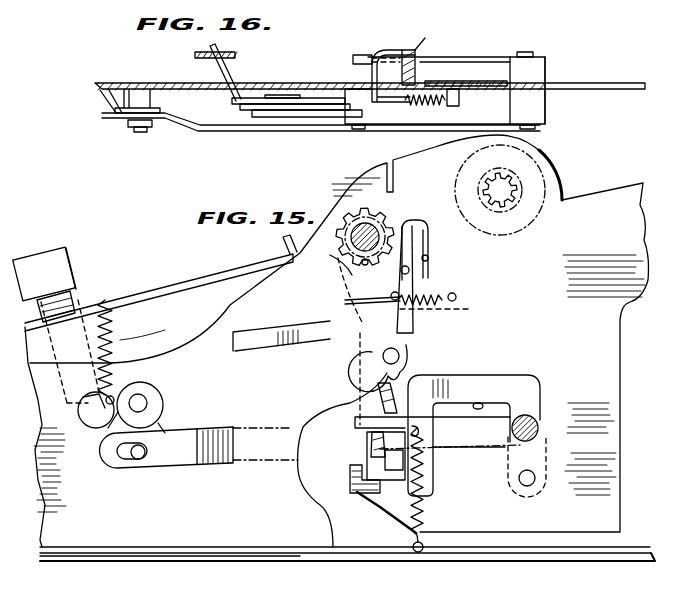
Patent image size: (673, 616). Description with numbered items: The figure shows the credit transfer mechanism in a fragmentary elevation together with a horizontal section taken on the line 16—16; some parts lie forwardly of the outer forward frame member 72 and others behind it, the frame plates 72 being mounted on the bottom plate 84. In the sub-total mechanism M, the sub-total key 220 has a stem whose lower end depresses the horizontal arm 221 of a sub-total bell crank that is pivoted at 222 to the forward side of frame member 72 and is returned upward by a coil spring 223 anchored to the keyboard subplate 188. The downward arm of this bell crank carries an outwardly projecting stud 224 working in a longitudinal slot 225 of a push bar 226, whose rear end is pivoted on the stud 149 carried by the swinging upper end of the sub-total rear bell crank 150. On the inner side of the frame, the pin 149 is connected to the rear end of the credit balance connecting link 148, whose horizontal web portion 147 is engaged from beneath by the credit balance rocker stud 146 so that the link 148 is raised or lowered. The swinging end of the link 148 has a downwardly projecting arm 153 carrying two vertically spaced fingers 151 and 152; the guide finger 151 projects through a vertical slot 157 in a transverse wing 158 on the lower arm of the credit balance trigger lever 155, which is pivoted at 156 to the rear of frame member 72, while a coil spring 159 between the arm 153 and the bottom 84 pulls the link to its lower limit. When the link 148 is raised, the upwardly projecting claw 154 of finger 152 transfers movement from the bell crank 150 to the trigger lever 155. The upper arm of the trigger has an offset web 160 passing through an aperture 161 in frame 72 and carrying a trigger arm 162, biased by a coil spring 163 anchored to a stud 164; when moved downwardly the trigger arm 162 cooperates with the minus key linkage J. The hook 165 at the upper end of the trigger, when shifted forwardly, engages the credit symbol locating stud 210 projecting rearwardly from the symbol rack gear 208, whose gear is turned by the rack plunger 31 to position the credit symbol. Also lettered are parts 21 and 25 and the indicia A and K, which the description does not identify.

In FIG. 16, the frame plate 72 is at (633, 91).
In FIG. 15, the frame plate 72 is at (238, 535).
In FIG. 15, the bottom plate 84 is at (482, 557).
In FIG. 16, the trigger arm 162 is at (303, 75).
In FIG. 15, the trigger arm 162 is at (341, 337).
In FIG. 16, the horizontal arm 221 is at (111, 96).
In FIG. 15, the horizontal arm 221 is at (108, 428).
In FIG. 16, the pivot 222 is at (161, 101).
In FIG. 15, the pivot 222 is at (149, 401).
In FIG. 16, the outwardly projecting stud 224 is at (143, 132).
In FIG. 15, the outwardly projecting stud 224 is at (142, 460).
In FIG. 15, the longitudinal slot 225 is at (120, 459).
In FIG. 16, the push bar 226 is at (295, 118).
In FIG. 15, the push bar 226 is at (192, 457).
In FIG. 15, the coil spring 223 is at (110, 326).
In FIG. 15, the sub-total key 220 is at (73, 260).
In FIG. 15, the keyboard subplate 188 is at (178, 284).
In FIG. 16, the horizontal web portion 147 is at (500, 58).
In FIG. 15, the horizontal web portion 147 is at (480, 386).
In FIG. 16, the credit balance connecting link 148 is at (547, 64).
In FIG. 15, the credit balance connecting link 148 is at (541, 377).
In FIG. 16, the pivot stud 149 is at (532, 53).
In FIG. 15, the pivot stud 149 is at (540, 426).
In FIG. 15, the sub-total rear bell crank 150 is at (547, 452).
In FIG. 16, the guide finger 151 is at (353, 59).
In FIG. 15, the guide finger 151 is at (356, 425).
In FIG. 15, the finger 152 is at (404, 495).
In FIG. 15, the downwardly projecting arm 153 is at (433, 430).
In FIG. 15, the claw 154 is at (352, 474).
In FIG. 16, the credit balance trigger lever 155 is at (416, 50).
In FIG. 15, the credit balance trigger lever 155 is at (415, 325).
In FIG. 15, the pivot 156 is at (400, 356).
In FIG. 15, the vertical slot 157 is at (370, 411).
In FIG. 16, the wing 158 is at (372, 66).
In FIG. 15, the wing 158 is at (368, 448).
In FIG. 15, the coil spring 159 is at (424, 521).
In FIG. 16, the offset web 160 is at (424, 81).
In FIG. 15, the offset web 160 is at (470, 309).
In FIG. 16, the aperture 161 is at (422, 84).
In FIG. 15, the aperture 161 is at (346, 301).
In FIG. 16, the coil spring 163 is at (442, 107).
In FIG. 15, the coil spring 163 is at (440, 292).
In FIG. 16, the anchor stud 164 is at (460, 98).
In FIG. 15, the anchor stud 164 is at (458, 297).
In FIG. 15, the hook 165 is at (428, 236).
In FIG. 15, the credit balance rocker stud 146 is at (494, 397).
In FIG. 15, the symbol rack gear teeth 208 is at (382, 213).
In FIG. 15, the credit symbol locating stud 210 is at (336, 276).
In FIG. 15, the ratchet wheel 21 is at (546, 182).
In FIG. 15, the frame 25 is at (610, 235).
In FIG. 15, the rack plunger 31 is at (428, 258).
In FIG. 15, the section line 16 is at (62, 328).
In FIG. 15, the axis A is at (548, 157).
In FIG. 16, the minus key linkage J is at (248, 137).
In FIG. 15, the direction arrow K is at (124, 249).
In FIG. 16, the sub-total mechanism M is at (418, 42).
In FIG. 15, the sub-total mechanism M is at (84, 306).